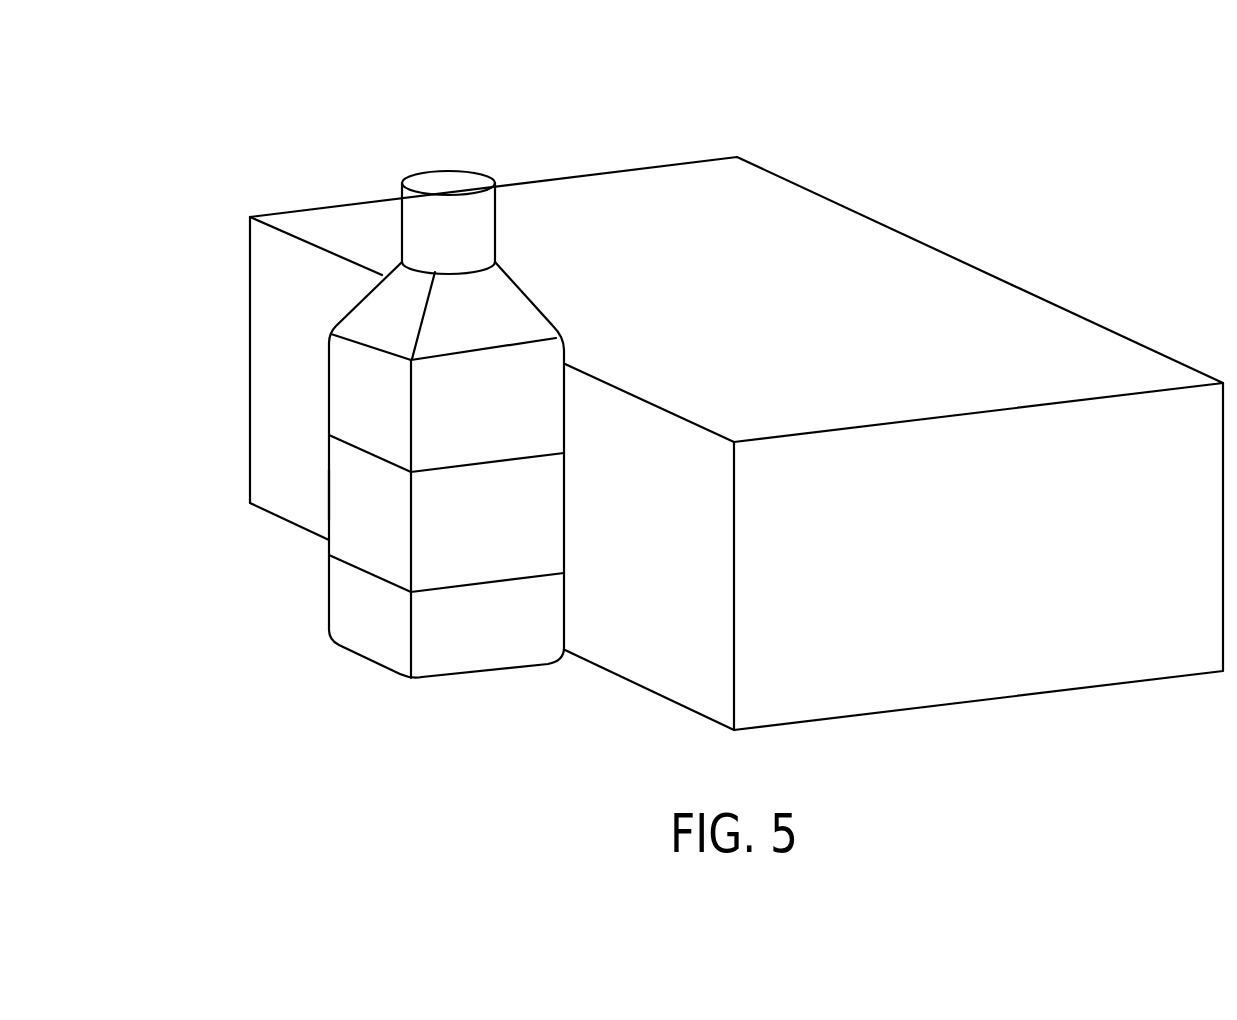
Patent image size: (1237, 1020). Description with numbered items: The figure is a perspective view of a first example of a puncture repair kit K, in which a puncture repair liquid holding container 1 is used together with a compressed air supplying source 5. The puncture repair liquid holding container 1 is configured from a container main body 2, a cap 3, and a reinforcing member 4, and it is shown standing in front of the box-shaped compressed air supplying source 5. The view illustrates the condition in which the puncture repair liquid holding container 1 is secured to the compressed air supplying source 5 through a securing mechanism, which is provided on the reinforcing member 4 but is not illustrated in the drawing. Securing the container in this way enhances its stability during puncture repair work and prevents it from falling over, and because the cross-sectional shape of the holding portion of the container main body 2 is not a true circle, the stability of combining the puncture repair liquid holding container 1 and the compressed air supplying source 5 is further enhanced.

The puncture repair liquid holding container 1 is at (370, 421).
The container main body 2 is at (323, 352).
The cap 3 is at (402, 177).
The reinforcing member 4 is at (294, 513).
The compressed air supplying source 5 is at (840, 238).
The puncture repair kit K is at (657, 128).